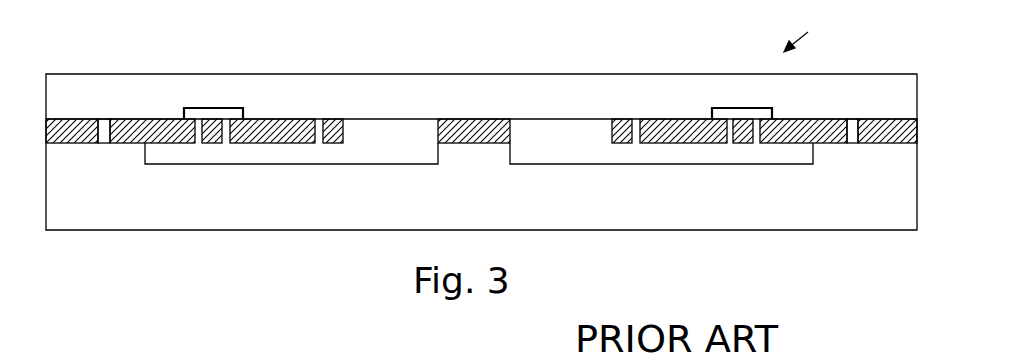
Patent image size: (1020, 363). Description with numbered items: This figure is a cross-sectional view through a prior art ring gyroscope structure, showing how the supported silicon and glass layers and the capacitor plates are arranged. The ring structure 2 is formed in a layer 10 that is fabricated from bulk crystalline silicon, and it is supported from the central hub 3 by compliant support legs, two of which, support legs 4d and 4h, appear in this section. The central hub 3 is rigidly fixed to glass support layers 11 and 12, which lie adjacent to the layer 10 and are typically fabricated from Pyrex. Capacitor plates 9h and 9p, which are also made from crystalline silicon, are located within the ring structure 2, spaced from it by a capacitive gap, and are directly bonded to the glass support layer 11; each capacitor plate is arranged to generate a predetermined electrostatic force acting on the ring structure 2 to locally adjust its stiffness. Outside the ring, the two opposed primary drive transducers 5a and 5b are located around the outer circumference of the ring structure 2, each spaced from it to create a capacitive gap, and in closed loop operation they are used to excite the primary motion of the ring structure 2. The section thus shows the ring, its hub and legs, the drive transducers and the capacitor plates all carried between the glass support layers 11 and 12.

The ring structure 2 is at (217, 119).
The central hub 3 is at (480, 142).
The support leg 4h is at (332, 119).
The support leg 4d is at (620, 119).
The primary drive transducer 5a is at (147, 119).
The primary drive transducer 5b is at (818, 119).
The capacitor plate 9p is at (275, 119).
The capacitor plate 9h is at (672, 119).
The layer 10 is at (882, 143).
The glass support layer 11 is at (415, 92).
The glass support layer 12 is at (843, 207).